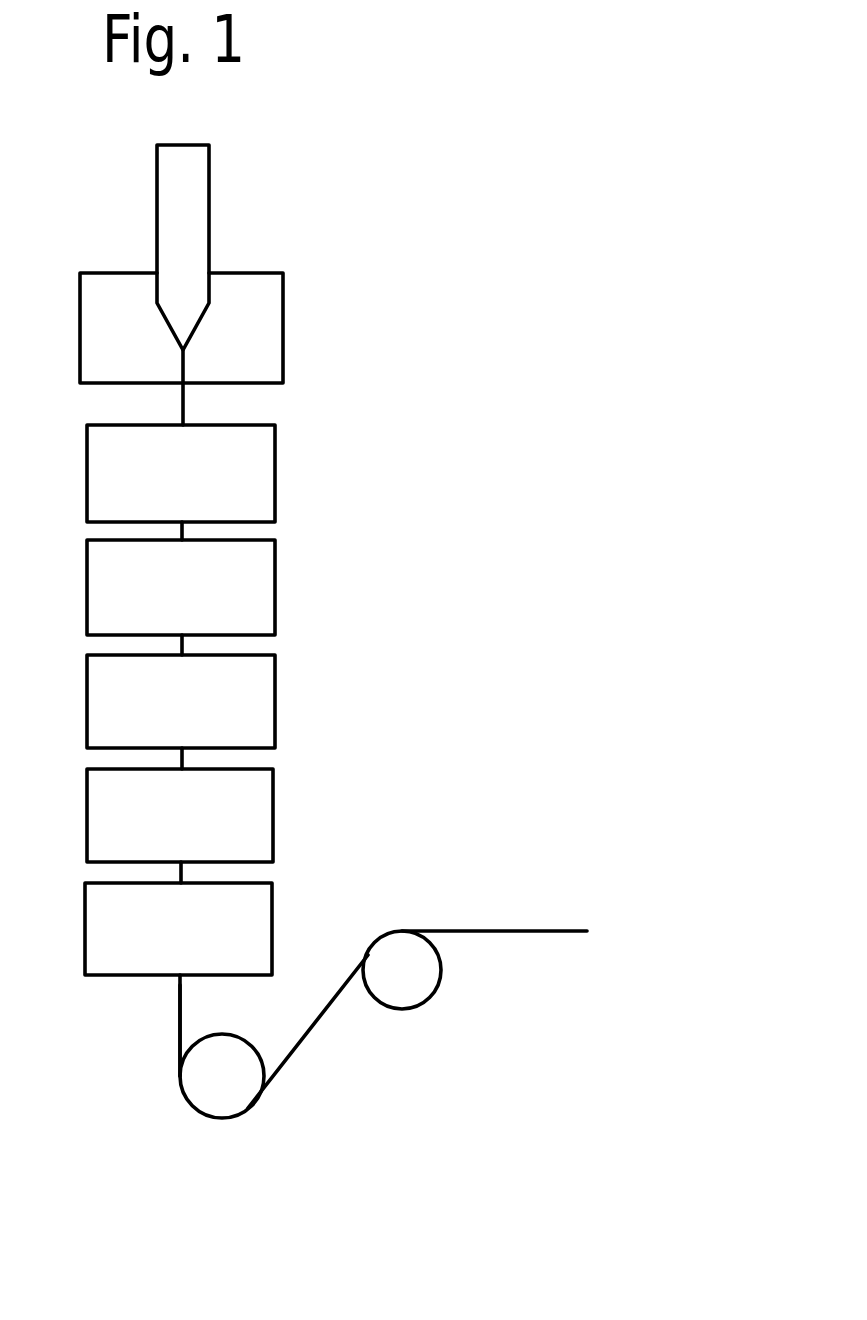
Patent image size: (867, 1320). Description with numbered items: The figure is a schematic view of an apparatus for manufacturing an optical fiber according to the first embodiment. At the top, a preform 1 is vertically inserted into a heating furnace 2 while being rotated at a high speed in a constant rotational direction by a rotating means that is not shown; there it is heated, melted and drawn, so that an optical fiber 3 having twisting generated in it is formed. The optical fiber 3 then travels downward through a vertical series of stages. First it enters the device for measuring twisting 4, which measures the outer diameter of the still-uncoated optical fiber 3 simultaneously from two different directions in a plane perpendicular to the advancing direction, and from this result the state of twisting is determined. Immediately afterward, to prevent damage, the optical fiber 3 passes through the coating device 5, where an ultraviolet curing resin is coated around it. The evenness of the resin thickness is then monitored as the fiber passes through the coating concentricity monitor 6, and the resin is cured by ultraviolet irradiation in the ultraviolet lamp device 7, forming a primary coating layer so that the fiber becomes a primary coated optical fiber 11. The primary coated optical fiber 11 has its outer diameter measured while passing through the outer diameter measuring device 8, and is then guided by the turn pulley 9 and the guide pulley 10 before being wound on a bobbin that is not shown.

The preform 1 is at (209, 213).
The heating furnace 2 is at (283, 325).
The optical fiber 3 is at (183, 405).
The device for measuring twisting 4 is at (275, 470).
The coating device 5 is at (275, 585).
The coating concentricity monitor 6 is at (275, 702).
The ultraviolet lamp device 7 is at (273, 813).
The outer diameter measuring device 8 is at (272, 905).
The turn pulley 9 is at (225, 1105).
The guide pulley 10 is at (402, 998).
The primary coated optical fiber 11 is at (179, 1008).